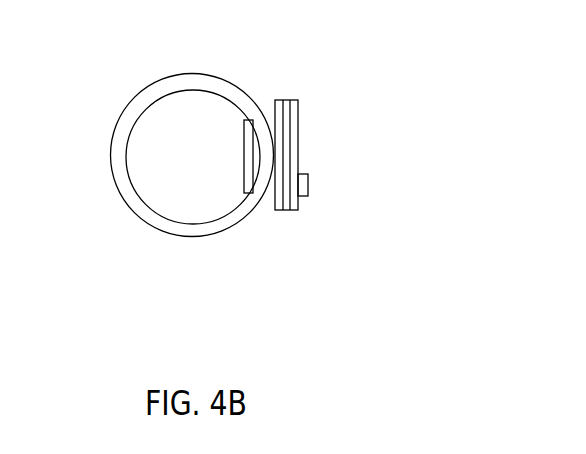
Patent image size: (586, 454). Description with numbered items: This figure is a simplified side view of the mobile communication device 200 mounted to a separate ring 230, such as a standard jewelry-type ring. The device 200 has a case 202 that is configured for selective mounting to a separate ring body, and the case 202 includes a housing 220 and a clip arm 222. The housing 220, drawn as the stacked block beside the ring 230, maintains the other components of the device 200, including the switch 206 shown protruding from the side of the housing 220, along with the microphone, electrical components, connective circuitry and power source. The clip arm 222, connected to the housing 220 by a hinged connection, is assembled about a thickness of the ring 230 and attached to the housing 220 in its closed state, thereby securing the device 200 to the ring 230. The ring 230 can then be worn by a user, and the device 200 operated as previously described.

The mobile communication device 200 is at (353, 108).
The case 202 is at (282, 93).
The switch 206 is at (310, 183).
The housing 220 is at (287, 212).
The clip arm 222 is at (243, 157).
The ring 230 is at (133, 119).